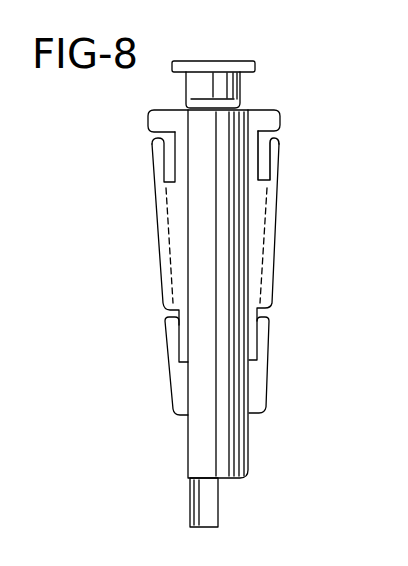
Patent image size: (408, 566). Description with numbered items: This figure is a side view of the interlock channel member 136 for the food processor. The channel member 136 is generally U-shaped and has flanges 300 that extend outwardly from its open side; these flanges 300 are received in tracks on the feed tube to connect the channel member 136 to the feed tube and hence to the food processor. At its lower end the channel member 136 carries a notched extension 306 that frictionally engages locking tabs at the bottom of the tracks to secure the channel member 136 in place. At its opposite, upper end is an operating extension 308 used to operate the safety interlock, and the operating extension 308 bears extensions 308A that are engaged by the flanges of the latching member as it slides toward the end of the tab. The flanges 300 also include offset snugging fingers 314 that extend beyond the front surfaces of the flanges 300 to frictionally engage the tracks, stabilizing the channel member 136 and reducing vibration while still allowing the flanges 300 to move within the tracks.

The channel member 136 is at (213, 262).
The flanges 300 is at (176, 207).
The notched extension 306 is at (261, 440).
The operating extension 308 is at (232, 88).
The extensions 308A is at (253, 66).
The snugging fingers 314 is at (152, 145).